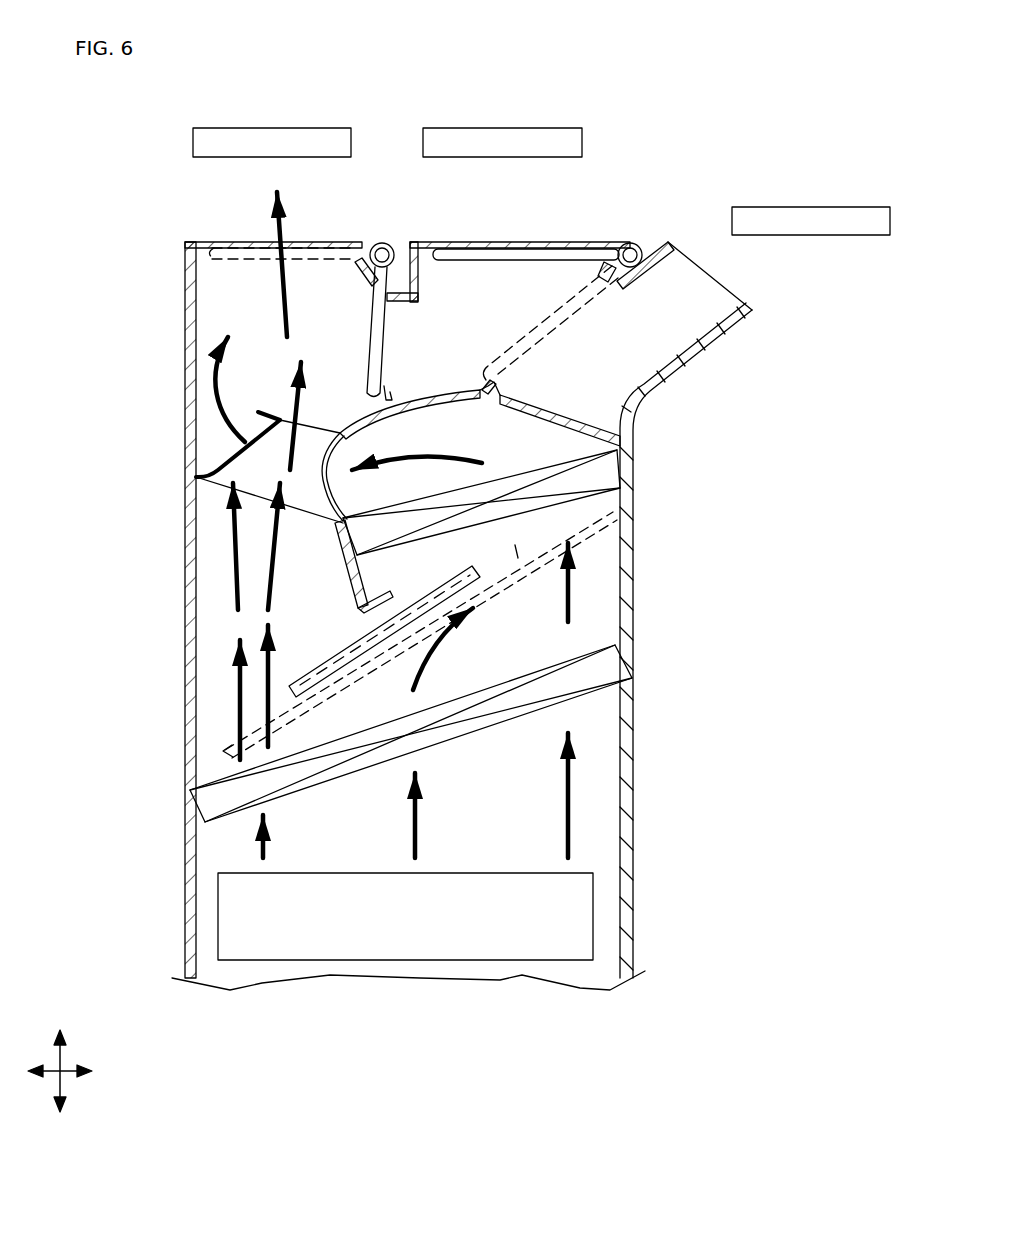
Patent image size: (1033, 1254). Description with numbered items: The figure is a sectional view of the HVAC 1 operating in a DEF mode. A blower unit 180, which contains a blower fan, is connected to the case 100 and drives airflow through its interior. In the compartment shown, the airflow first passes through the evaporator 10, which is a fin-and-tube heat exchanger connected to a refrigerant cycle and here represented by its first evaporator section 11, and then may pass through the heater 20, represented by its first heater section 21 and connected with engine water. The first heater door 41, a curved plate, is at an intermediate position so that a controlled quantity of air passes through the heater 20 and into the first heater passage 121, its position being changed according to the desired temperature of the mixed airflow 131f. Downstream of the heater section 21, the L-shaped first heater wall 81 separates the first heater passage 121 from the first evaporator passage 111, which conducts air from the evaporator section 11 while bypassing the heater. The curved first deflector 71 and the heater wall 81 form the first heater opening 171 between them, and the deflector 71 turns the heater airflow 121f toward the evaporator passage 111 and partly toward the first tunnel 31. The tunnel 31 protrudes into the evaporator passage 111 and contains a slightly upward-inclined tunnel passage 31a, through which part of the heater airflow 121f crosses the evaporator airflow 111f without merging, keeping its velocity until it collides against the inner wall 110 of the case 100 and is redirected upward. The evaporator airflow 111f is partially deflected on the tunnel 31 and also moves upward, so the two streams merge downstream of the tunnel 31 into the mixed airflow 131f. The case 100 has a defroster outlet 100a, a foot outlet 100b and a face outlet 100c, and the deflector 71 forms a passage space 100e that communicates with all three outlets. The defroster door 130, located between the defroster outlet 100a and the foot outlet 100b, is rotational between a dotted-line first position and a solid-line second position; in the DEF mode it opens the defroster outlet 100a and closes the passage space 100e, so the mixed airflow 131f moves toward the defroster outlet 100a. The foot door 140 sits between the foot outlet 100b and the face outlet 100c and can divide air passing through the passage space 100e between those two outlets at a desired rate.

The HVAC 1 is at (791, 44).
The case 100 is at (634, 565).
The defroster outlet 100a is at (235, 242).
The foot outlet 100b is at (542, 242).
The face outlet 100c is at (723, 285).
The passage space 100e is at (452, 370).
The inner wall 110 is at (185, 338).
The first evaporator passage 111 is at (237, 628).
The evaporator airflow 111f is at (238, 544).
The first heater passage 121 is at (497, 458).
The heater airflow 121f is at (205, 377).
The defroster door 130 is at (235, 327).
The mixed airflow 131f is at (244, 273).
The foot door 140 is at (517, 243).
The first heater opening 171 is at (337, 473).
The first deflector 71 is at (600, 412).
The first heater wall 81 is at (357, 601).
The first tunnel 31 is at (178, 491).
The tunnel passage 31a is at (253, 450).
The first heater door 41 is at (477, 573).
The first heater section 21 is at (622, 494).
The heater 20 is at (549, 502).
The first evaporator section 11 is at (587, 693).
The evaporator 10 is at (473, 733).
The blower unit 180 is at (418, 960).